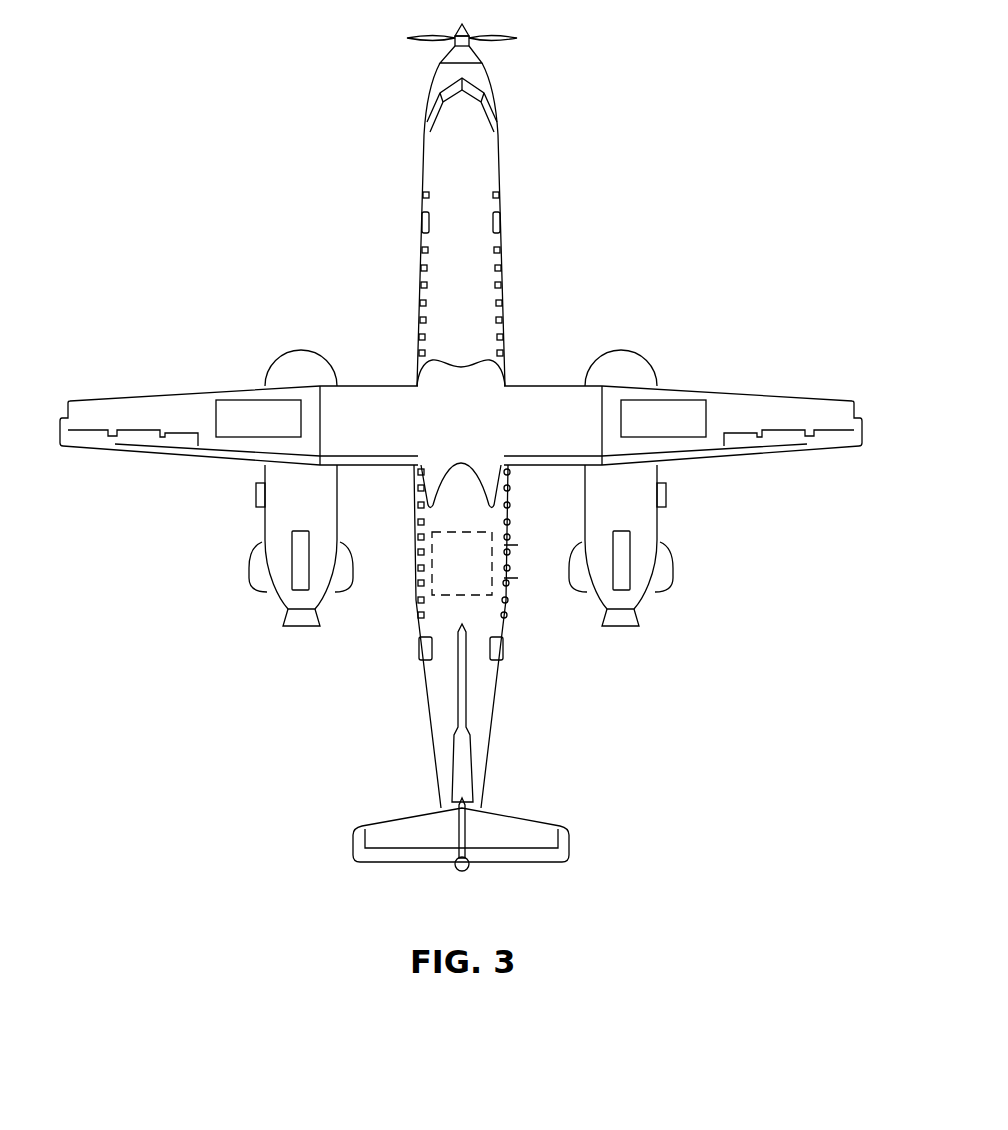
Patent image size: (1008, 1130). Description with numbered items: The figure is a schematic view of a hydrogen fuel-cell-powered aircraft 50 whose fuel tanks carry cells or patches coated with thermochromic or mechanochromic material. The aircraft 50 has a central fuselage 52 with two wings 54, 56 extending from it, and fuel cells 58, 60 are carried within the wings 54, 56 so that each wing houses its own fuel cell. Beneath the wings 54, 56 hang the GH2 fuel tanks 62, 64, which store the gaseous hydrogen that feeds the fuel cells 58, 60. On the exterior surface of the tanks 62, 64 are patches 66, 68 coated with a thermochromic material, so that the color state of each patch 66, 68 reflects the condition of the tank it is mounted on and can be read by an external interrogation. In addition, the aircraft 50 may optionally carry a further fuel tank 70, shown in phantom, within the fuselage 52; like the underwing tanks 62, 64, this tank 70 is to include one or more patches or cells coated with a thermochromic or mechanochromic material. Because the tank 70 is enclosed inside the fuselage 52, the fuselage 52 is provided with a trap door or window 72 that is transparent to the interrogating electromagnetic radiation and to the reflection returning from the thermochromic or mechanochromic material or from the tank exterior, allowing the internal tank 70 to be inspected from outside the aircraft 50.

The aircraft 50 is at (630, 82).
The fuselage 52 is at (506, 242).
The wing 54 is at (137, 396).
The wing 56 is at (743, 393).
The fuel cell 58 is at (247, 438).
The fuel cell 60 is at (677, 438).
The GH2 fuel tank 62 is at (263, 533).
The GH2 fuel tank 64 is at (659, 533).
The patch 66 is at (253, 495).
The patch 68 is at (669, 495).
The fuel tank 70 is at (412, 565).
The trap door or window 72 is at (510, 565).